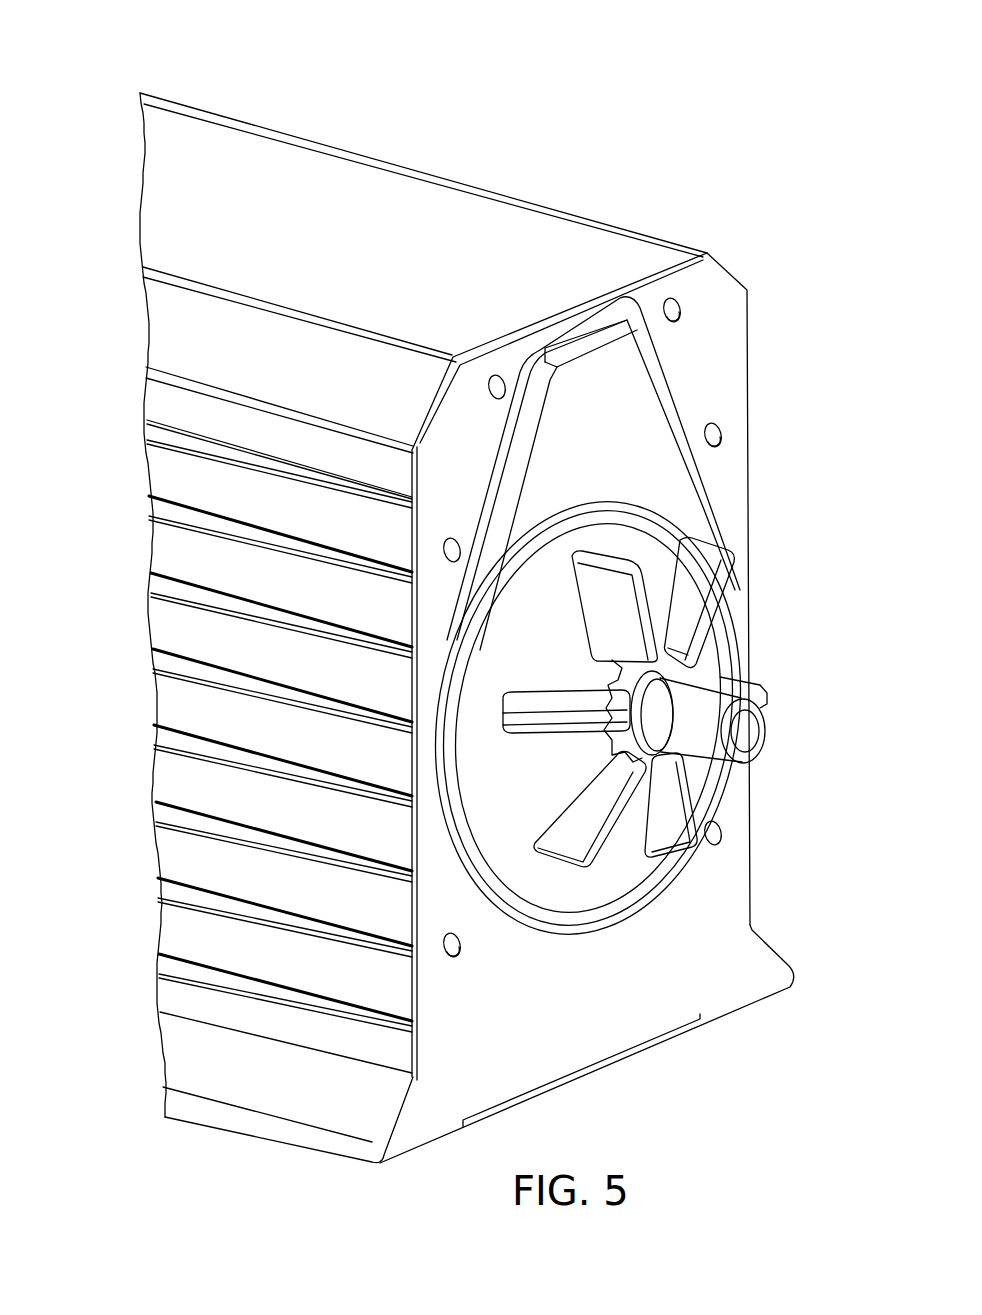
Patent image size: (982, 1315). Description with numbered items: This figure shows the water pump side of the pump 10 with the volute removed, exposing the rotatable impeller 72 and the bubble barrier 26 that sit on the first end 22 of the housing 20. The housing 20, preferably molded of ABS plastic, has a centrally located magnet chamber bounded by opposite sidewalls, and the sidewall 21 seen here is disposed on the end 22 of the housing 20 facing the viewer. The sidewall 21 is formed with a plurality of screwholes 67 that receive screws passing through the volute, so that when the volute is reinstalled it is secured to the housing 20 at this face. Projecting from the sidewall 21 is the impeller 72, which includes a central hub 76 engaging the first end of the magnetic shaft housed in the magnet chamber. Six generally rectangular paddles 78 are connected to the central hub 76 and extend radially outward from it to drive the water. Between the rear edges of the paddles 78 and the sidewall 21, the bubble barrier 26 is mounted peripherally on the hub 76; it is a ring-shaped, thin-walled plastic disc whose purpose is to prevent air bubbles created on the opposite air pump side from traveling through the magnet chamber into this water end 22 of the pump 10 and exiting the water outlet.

The pump 10 is at (228, 99).
The housing 20 is at (180, 638).
The sidewall 21 is at (580, 1030).
The first end 22 is at (771, 455).
The bubble barrier 26 is at (624, 849).
The screwholes 67 is at (677, 322).
The impeller 72 is at (762, 684).
The central hub 76 is at (572, 558).
The paddles 78 is at (690, 520).